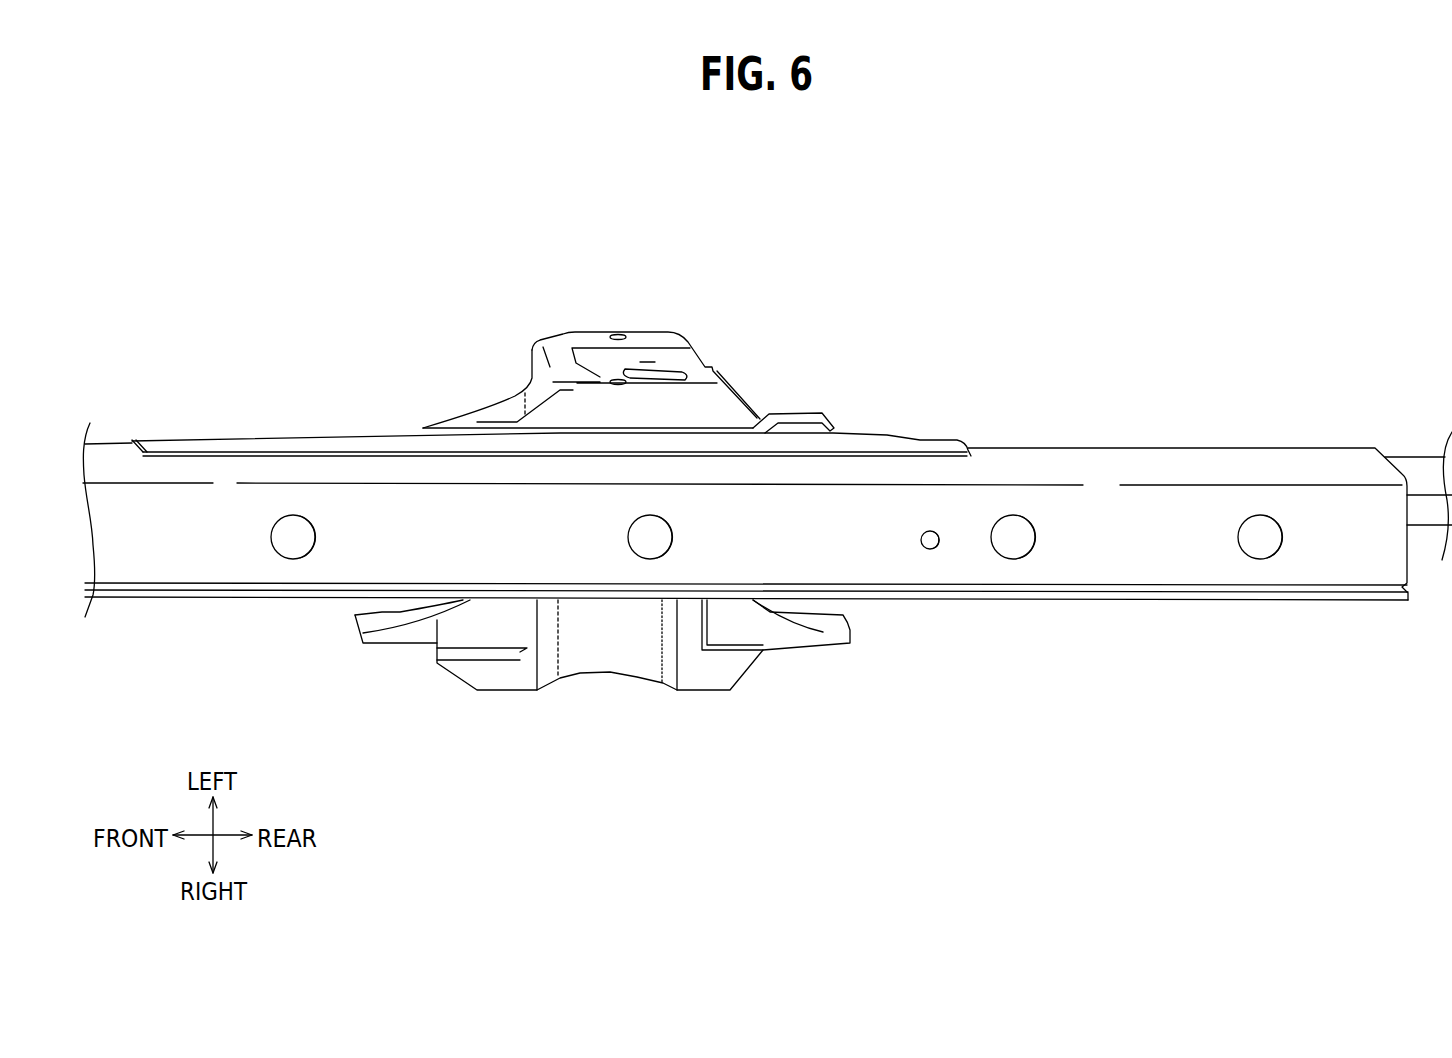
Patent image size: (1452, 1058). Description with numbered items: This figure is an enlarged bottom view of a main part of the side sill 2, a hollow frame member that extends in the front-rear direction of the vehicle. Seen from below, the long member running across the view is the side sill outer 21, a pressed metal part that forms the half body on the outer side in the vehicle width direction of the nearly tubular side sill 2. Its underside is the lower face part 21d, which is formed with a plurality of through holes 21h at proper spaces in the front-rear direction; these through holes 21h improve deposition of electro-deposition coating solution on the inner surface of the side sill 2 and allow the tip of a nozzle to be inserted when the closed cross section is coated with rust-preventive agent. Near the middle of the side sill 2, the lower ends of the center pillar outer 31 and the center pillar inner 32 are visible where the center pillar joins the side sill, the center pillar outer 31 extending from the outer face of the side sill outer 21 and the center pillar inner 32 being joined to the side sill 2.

The side sill 2 is at (767, 520).
The side sill outer 21 is at (767, 578).
The lower face part 21d is at (1083, 555).
The through holes 21h is at (1013, 558).
The center pillar outer 31 is at (650, 335).
The center pillar inner 32 is at (720, 673).